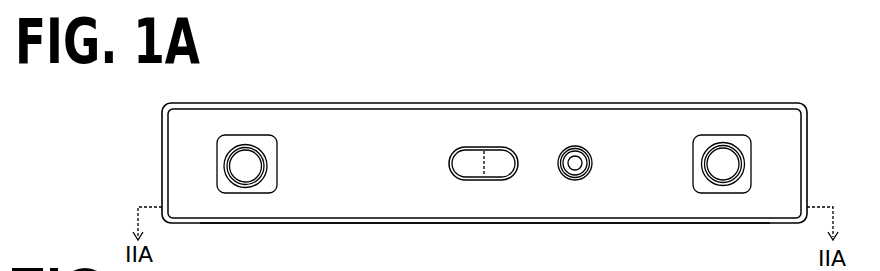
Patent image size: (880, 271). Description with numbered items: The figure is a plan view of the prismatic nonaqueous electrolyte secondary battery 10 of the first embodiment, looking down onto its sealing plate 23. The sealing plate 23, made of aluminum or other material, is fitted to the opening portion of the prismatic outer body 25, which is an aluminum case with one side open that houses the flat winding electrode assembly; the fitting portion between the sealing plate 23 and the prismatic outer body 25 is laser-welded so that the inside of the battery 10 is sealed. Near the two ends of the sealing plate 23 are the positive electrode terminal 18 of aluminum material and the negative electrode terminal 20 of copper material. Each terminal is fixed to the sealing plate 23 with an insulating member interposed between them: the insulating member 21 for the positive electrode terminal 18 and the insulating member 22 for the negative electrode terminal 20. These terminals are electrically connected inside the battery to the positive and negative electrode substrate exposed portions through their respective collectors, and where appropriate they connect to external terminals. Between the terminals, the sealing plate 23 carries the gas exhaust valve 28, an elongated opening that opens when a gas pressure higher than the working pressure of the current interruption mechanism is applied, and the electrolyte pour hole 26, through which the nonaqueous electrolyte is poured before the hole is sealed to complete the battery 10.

The nonaqueous electrolyte secondary battery 10 is at (118, 88).
The positive electrode terminal 18 is at (723, 160).
The negative electrode terminal 20 is at (242, 162).
The insulating member 21 is at (742, 187).
The insulating member 22 is at (266, 188).
The sealing plate 23 is at (371, 137).
The prismatic outer body 25 is at (470, 223).
The electrolyte pour hole 26 is at (575, 172).
The gas exhaust valve 28 is at (497, 158).